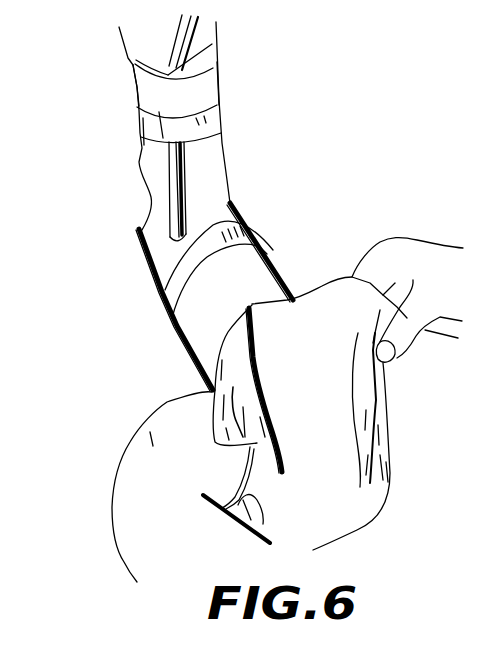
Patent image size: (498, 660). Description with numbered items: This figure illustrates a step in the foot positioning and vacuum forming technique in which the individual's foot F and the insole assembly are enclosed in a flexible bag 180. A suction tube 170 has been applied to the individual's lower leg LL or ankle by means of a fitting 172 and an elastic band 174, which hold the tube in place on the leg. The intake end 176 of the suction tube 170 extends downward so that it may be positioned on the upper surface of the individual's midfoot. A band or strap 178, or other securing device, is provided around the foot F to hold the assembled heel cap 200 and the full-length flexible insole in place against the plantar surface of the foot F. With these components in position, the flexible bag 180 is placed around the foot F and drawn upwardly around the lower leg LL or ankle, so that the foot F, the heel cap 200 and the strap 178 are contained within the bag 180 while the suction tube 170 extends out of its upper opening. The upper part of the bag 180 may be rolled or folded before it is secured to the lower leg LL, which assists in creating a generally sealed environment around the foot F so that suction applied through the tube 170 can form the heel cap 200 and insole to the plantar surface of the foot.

The lower leg LL is at (143, 42).
The suction tube 170 is at (214, 46).
The fitting 172 is at (208, 85).
The elastic band 174 is at (221, 112).
The intake end 176 is at (167, 180).
The band or strap 178 is at (158, 292).
The heel cap 200 is at (188, 378).
The flexible bag 180 is at (370, 415).
The foot F is at (260, 285).